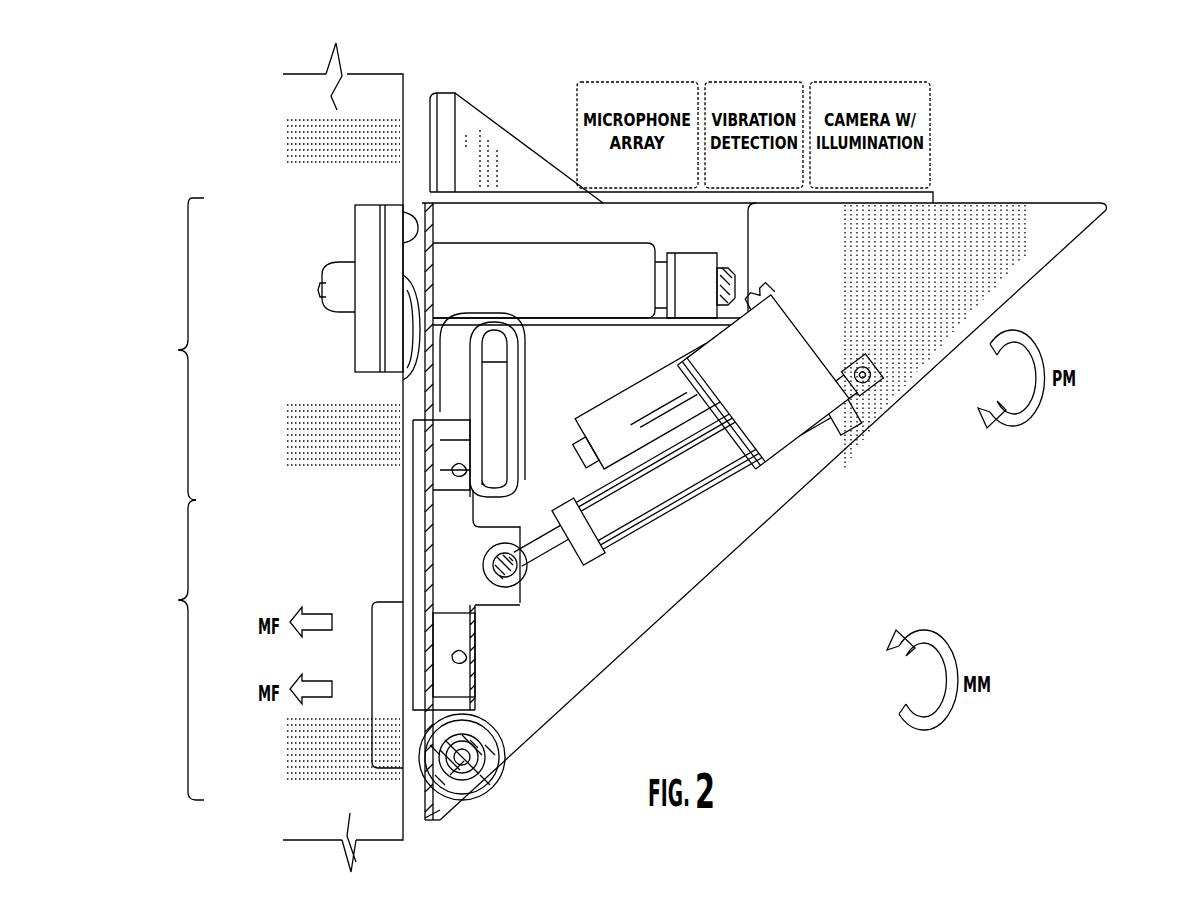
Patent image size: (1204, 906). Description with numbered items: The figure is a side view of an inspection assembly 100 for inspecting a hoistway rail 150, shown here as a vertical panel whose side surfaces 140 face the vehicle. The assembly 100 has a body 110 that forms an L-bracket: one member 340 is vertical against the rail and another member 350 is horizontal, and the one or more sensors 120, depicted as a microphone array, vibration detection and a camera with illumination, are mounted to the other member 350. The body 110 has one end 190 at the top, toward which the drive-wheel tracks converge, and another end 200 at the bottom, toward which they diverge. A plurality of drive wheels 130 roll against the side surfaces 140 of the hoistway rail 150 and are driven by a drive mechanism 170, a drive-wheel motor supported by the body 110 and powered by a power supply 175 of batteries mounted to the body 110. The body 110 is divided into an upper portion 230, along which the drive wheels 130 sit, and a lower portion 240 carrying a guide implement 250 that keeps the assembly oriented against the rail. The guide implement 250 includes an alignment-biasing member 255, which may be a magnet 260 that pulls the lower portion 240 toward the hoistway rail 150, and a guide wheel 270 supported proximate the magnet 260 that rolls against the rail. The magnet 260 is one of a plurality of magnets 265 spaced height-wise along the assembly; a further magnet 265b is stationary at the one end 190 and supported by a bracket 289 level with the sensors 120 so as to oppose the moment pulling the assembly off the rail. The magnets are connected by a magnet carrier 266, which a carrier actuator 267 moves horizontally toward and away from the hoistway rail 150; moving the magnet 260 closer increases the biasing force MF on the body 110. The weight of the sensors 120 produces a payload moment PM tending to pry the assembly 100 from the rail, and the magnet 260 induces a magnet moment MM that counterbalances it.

The inspection assembly 100 is at (1072, 273).
The body 110 is at (1046, 246).
The sensors 120 is at (940, 183).
The drive wheels 130 is at (342, 247).
The side surfaces 140 is at (300, 498).
The hoistway rail 150 is at (303, 455).
The drive mechanism 170 is at (725, 262).
The power supply 175 is at (440, 413).
The one end of the body 190 is at (408, 158).
The another end of the body 200 is at (400, 798).
The upper portion 230 is at (177, 349).
The lower portion 240 is at (177, 650).
The guide implement 250 is at (370, 660).
The alignment-biasing member 255 is at (475, 636).
The magnet 260 is at (478, 672).
The plurality of magnets 265 is at (462, 443).
The further magnet 265b is at (422, 320).
The magnet carrier 266 is at (522, 602).
The carrier actuator 267 is at (733, 490).
The guide wheel 270 is at (508, 767).
The bracket 289 is at (493, 133).
The one member of the L-bracket 340 is at (415, 330).
The other member of the L-bracket 350 is at (600, 202).